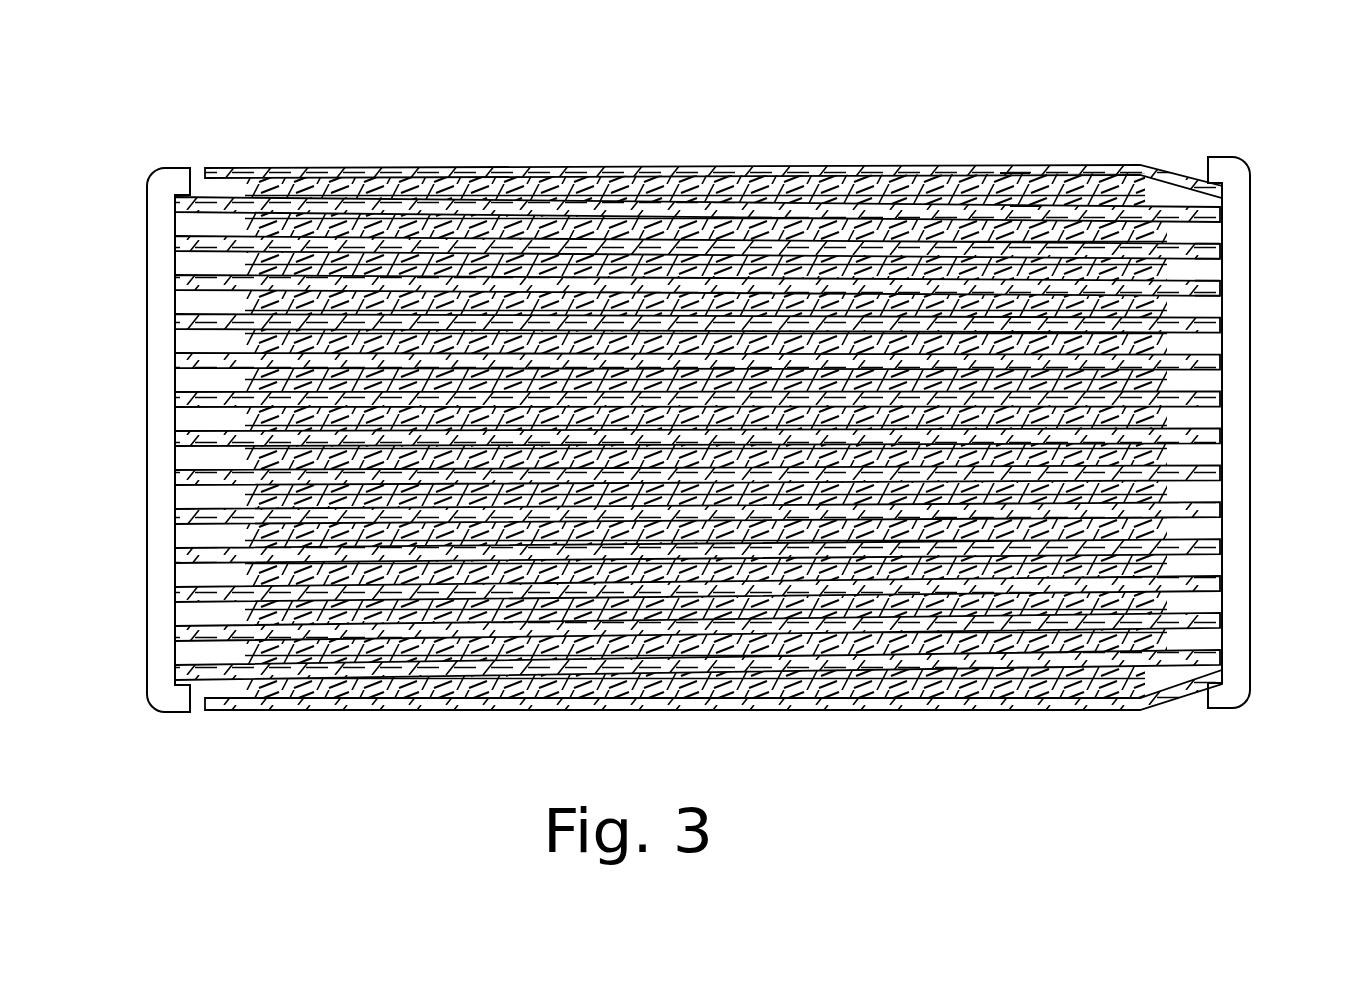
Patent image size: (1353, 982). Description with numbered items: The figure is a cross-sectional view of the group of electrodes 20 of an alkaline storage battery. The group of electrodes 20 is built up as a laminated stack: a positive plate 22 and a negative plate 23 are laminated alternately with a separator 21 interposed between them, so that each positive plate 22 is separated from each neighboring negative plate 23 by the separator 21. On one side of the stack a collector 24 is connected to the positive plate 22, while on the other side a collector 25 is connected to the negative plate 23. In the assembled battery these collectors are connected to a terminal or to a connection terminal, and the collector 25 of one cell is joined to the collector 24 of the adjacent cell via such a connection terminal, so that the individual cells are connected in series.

The group of electrodes 20 is at (139, 157).
The separator 21 is at (932, 208).
The positive plate 22 is at (817, 237).
The negative plate 23 is at (1030, 220).
The collector 24 is at (162, 442).
The collector 25 is at (1242, 420).